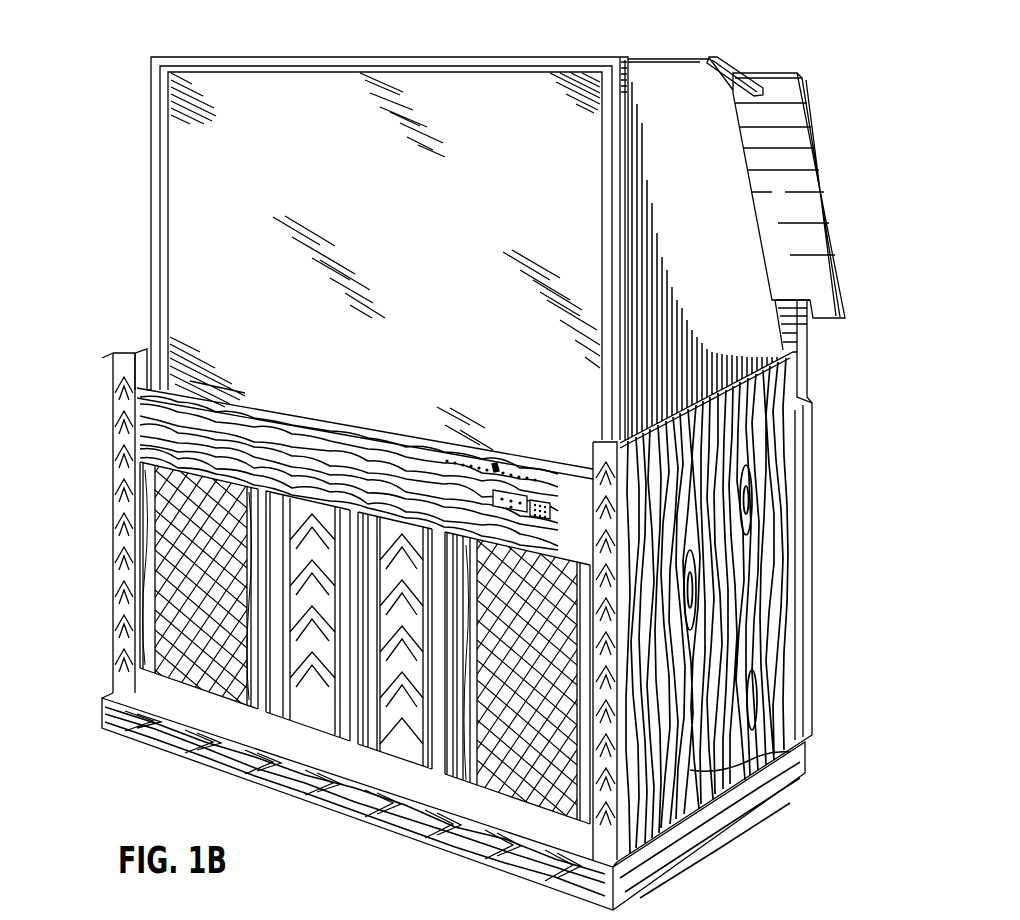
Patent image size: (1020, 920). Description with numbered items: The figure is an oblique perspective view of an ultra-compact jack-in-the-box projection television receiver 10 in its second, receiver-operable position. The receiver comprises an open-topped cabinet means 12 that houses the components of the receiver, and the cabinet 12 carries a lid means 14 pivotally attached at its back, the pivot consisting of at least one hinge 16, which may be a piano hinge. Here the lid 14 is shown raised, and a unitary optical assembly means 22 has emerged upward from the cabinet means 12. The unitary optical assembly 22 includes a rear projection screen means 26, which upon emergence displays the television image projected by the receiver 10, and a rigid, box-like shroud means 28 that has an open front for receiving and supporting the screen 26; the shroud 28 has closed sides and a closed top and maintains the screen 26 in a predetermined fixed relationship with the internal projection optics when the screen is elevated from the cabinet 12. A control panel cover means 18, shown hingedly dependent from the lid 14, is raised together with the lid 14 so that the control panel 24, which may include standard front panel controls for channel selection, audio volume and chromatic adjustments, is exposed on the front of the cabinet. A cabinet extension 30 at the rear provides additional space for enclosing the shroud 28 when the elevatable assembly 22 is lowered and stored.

The projection television receiver 10 is at (140, 133).
The cabinet means 12 is at (112, 557).
The lid means 14 is at (810, 133).
The hinge 16 is at (824, 360).
The control panel cover means 18 is at (728, 68).
The unitary optical assembly means 22 is at (140, 83).
The control panel 24 is at (118, 385).
The rear projection screen means 26 is at (235, 193).
The shroud means 28 is at (717, 245).
The cabinet extension 30 is at (812, 510).